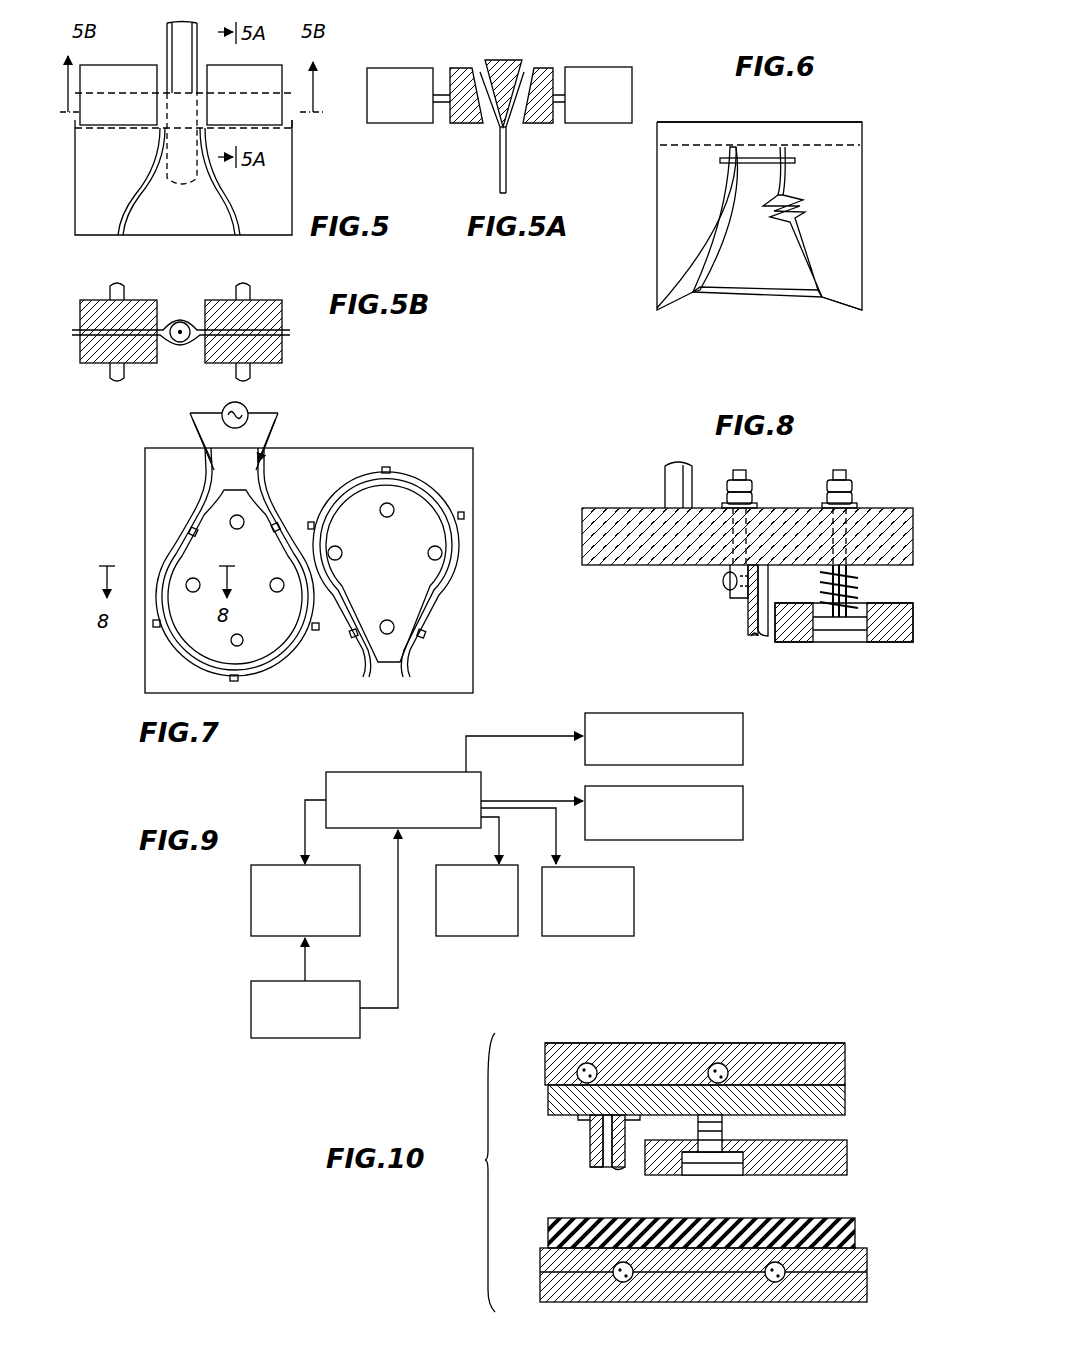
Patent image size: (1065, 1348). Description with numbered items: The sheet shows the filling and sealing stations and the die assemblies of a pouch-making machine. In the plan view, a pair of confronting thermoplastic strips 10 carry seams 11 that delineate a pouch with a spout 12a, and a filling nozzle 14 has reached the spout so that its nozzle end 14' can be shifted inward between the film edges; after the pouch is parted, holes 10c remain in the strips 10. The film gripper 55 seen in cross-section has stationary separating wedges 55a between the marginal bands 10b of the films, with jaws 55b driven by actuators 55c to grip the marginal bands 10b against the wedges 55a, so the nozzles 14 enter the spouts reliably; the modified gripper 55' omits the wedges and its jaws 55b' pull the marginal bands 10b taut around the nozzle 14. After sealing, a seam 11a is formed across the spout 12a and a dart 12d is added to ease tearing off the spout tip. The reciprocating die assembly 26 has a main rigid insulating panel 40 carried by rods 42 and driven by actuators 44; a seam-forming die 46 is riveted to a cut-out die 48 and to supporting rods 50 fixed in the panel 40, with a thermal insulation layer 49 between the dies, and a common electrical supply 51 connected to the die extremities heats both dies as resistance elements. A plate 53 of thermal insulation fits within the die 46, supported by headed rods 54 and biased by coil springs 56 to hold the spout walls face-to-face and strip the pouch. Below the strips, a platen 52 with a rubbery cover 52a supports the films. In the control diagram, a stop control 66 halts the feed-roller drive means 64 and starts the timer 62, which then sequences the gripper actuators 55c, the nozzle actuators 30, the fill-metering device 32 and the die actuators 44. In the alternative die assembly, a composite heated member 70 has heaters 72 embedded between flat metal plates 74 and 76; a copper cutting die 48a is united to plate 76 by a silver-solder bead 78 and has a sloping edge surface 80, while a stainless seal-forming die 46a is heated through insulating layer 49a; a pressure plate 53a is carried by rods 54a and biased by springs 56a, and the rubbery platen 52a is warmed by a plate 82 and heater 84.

In FIG. 5, the strips 10 is at (297, 192).
In FIG. 5A, the strips 10 is at (500, 180).
In FIG. 6, the strips 10 is at (860, 222).
In FIG. 5, the marginal bands 10b is at (292, 126).
In FIG. 5A, the marginal bands 10b is at (500, 125).
In FIG. 5B, the marginal bands 10b is at (292, 336).
In FIG. 6, the marginal bands 10b is at (857, 133).
In FIG. 6, the holes 10c is at (833, 290).
In FIG. 5, the seams 11 is at (226, 214).
In FIG. 6, the seams 11 is at (702, 272).
In FIG. 6, the seam across spout 11a is at (752, 158).
In FIG. 5, the spouts 12a is at (206, 202).
In FIG. 6, the spouts 12a is at (735, 232).
In FIG. 6, the dart 12d is at (786, 190).
In FIG. 5, the filling nozzles 14 is at (198, 53).
In FIG. 5B, the filling nozzles 14 is at (176, 354).
In FIG. 5, the nozzle ends 14' is at (151, 143).
In FIG. 10, the reciprocating die assembly 26 is at (862, 1068).
In FIG. 9, the nozzle actuators 30 is at (745, 742).
In FIG. 9, the fill-metering device 32 is at (745, 802).
In FIG. 7, the main rigid panel 40 is at (300, 452).
In FIG. 8, the main rigid panel 40 is at (893, 510).
In FIG. 8, the rods 42 is at (663, 480).
In FIG. 9, the actuators 44 is at (445, 936).
In FIG. 7, the seam-forming die 46 is at (258, 502).
In FIG. 8, the seam-forming die 46 is at (766, 636).
In FIG. 10, the seal-forming die 46a is at (624, 1170).
In FIG. 7, the cut-out die 48 is at (185, 520).
In FIG. 8, the cut-out die 48 is at (748, 622).
In FIG. 10, the cutting die 48a is at (590, 1152).
In FIG. 8, the thermal insulation layer 49 is at (755, 637).
In FIG. 10, the ribbon end 49a is at (608, 1168).
In FIG. 7, the supporting rods 50 is at (318, 624).
In FIG. 8, the supporting rods 50 is at (730, 584).
In FIG. 7, the electrical supply 51 is at (248, 408).
In FIG. 10, the platen 52 is at (870, 1262).
In FIG. 10, the rubbery platen cover 52a is at (552, 1236).
In FIG. 7, the plate 53 is at (286, 648).
In FIG. 8, the plate 53 is at (908, 615).
In FIG. 10, the pressure plate 53a is at (852, 1150).
In FIG. 7, the headed rods 54 is at (230, 640).
In FIG. 8, the headed rods 54 is at (826, 580).
In FIG. 10, the rods 54a is at (720, 1162).
In FIG. 5A, the gripper 55 is at (544, 151).
In FIG. 5B, the modified gripper 55' is at (333, 344).
In FIG. 5A, the separating wedges 55a is at (507, 60).
In FIG. 5, the jaws 55b is at (187, 68).
In FIG. 5A, the jaws 55b is at (466, 73).
In FIG. 5B, the jaws 55b' is at (204, 317).
In FIG. 5A, the gripper actuators 55c is at (614, 70).
In FIG. 9, the gripper actuators 55c is at (636, 886).
In FIG. 8, the coil springs 56 is at (852, 576).
In FIG. 10, the springs 56a is at (724, 1125).
In FIG. 9, the timer 62 is at (385, 772).
In FIG. 9, the drive means 64 is at (251, 903).
In FIG. 9, the stop control 66 is at (251, 1013).
In FIG. 10, the composite heated member 70 is at (695, 1044).
In FIG. 10, the heaters 72 is at (720, 1064).
In FIG. 10, the plate 74 is at (575, 1050).
In FIG. 10, the plate 76 is at (556, 1103).
In FIG. 10, the bead of silver solder 78 is at (584, 1120).
In FIG. 10, the sloping edge surface 80 is at (592, 1168).
In FIG. 10, the plate 82 is at (545, 1272).
In FIG. 10, the heater 84 is at (618, 1282).